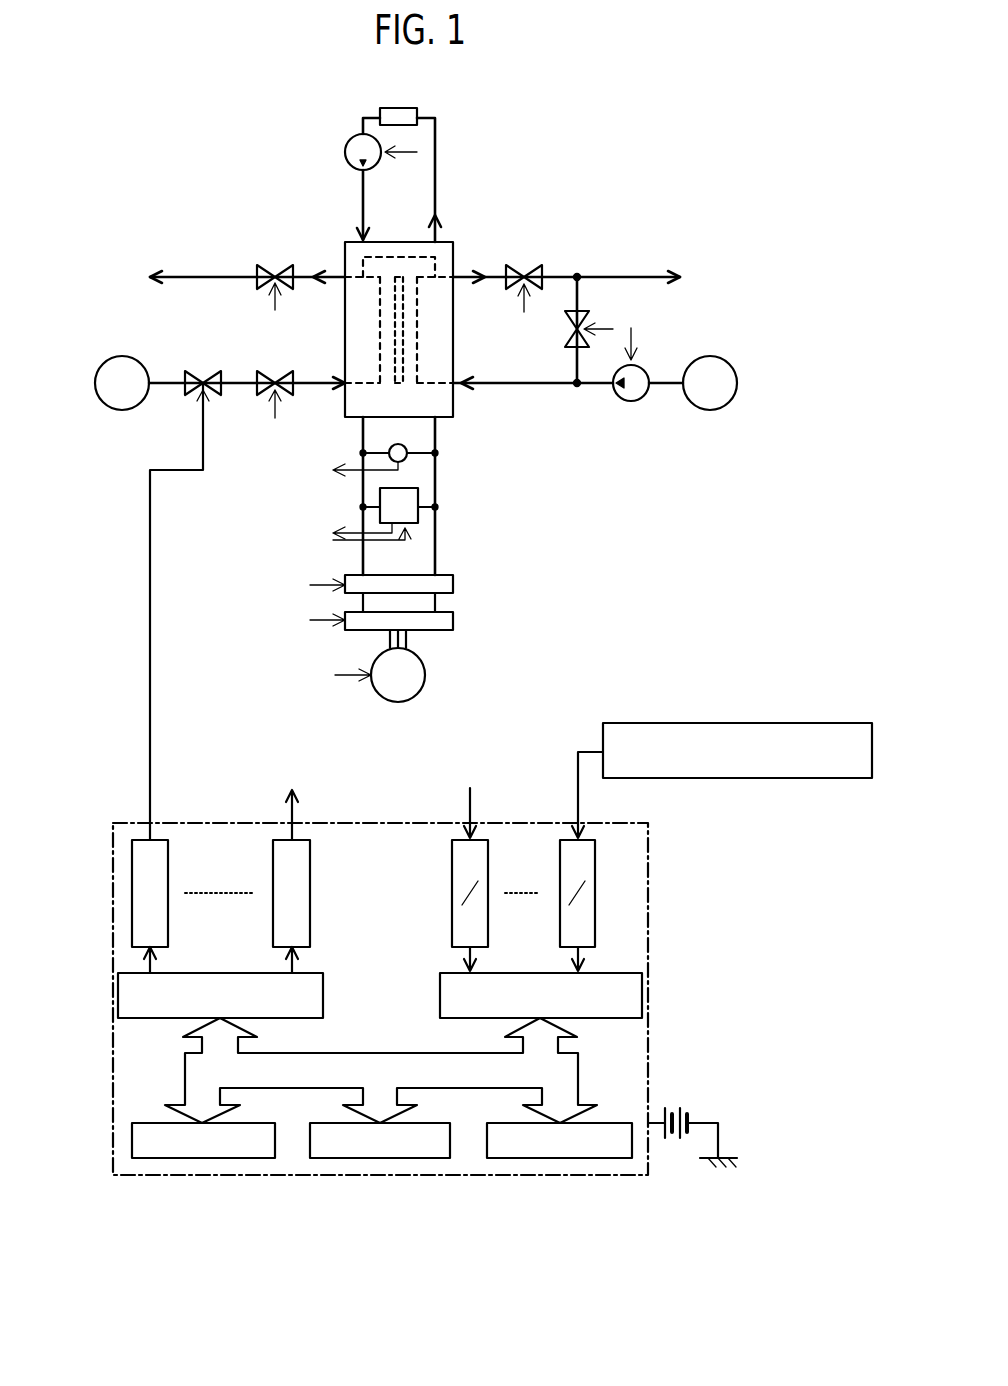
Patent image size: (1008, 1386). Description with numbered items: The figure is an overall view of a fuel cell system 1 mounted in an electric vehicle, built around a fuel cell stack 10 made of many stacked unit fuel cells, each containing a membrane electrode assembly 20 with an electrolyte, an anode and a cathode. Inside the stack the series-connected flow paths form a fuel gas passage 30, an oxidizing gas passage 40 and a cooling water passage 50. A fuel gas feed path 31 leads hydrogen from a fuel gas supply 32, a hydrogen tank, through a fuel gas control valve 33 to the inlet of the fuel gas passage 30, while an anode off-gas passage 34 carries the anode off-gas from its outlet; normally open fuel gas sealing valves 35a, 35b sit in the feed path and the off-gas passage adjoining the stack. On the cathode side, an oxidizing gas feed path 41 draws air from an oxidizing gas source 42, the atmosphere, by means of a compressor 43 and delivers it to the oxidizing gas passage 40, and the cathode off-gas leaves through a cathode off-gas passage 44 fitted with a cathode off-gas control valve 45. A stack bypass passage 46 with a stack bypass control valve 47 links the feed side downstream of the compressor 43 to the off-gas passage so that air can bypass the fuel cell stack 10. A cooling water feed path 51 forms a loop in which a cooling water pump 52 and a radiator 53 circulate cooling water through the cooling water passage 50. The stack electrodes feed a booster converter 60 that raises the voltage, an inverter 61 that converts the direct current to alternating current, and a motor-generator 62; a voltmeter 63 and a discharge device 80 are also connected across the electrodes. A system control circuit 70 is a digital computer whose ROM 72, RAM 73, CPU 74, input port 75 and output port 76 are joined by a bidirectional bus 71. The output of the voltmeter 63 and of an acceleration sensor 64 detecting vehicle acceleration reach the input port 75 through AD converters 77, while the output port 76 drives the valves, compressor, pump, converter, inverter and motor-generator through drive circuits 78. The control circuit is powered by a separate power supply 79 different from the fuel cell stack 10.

The fuel cell system 1 is at (764, 121).
The fuel cell stack 10 is at (380, 343).
The membrane electrode assembly 20 is at (457, 330).
The fuel gas passage 30 is at (371, 297).
The fuel gas feed path 31 is at (232, 352).
The fuel gas supply 32 is at (119, 400).
The fuel gas control valve 33 is at (185, 605).
The anode off-gas passage 34 is at (241, 247).
The fuel gas sealing valve 35a is at (251, 408).
The fuel gas sealing valve 35b is at (248, 260).
The oxidizing gas passage 40 is at (482, 422).
The oxidizing gas feed path 41 is at (582, 354).
The oxidizing gas source 42 is at (716, 404).
The compressor 43 is at (645, 390).
The cathode off-gas passage 44 is at (575, 247).
The cathode off-gas control valve 45 is at (543, 261).
The stack bypass passage 46 is at (616, 330).
The stack bypass control valve 47 is at (559, 343).
The cooling water passage 50 is at (396, 215).
The cooling water feed path 51 is at (431, 180).
The cooling water pump 52 is at (356, 138).
The radiator 53 is at (432, 98).
The booster converter 60 is at (410, 599).
The inverter 61 is at (410, 624).
The motor-generator 62 is at (405, 679).
The voltmeter 63 is at (421, 496).
The acceleration sensor 64 is at (722, 767).
The system control circuit 70 is at (348, 993).
The bidirectional bus 71 is at (395, 1070).
The ROM 72 is at (218, 1167).
The RAM 73 is at (397, 1166).
The CPU 74 is at (575, 1166).
The input port 75 is at (519, 972).
The output port 76 is at (242, 974).
The AD converters 77 is at (523, 874).
The drive circuits 78 is at (221, 875).
The power supply 79 is at (692, 1112).
The discharge device 80 is at (421, 520).